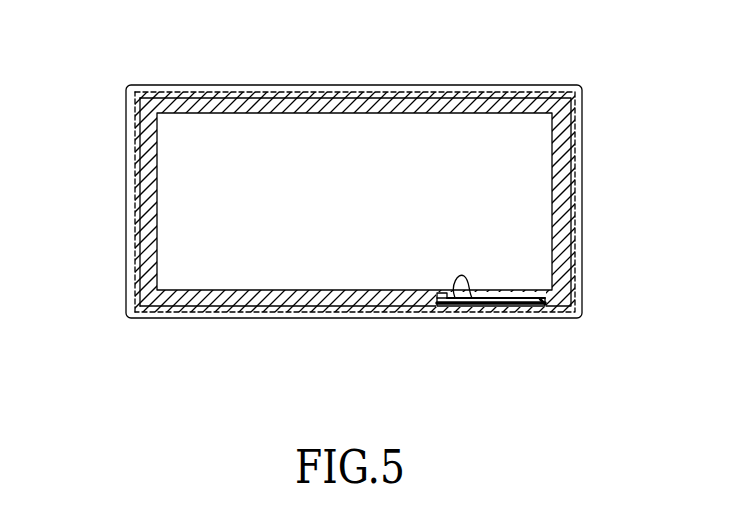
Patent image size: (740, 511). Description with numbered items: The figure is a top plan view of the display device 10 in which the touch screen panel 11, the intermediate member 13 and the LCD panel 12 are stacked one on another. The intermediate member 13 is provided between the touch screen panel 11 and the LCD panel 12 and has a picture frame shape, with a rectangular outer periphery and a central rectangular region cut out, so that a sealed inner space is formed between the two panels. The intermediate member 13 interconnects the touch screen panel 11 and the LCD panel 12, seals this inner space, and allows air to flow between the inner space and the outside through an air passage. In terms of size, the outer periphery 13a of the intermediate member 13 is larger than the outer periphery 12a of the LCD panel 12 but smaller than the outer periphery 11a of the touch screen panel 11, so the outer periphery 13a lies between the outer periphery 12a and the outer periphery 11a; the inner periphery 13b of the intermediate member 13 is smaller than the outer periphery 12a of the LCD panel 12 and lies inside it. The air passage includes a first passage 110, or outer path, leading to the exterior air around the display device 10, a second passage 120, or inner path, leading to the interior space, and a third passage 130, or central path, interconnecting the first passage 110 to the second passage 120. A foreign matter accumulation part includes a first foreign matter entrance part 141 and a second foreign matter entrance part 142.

The display device 10 is at (548, 58).
The touch screen panel 11 is at (580, 180).
The outer periphery of the touch screen panel 11a is at (582, 148).
The LCD panel 12 is at (538, 242).
The outer periphery of the LCD panel 12a is at (571, 272).
The intermediate member 13 is at (147, 177).
The outer periphery of the intermediate member 13a is at (136, 250).
The inner periphery of the intermediate member 13b is at (152, 224).
The first passage 110 is at (503, 307).
The second passage 120 is at (447, 300).
The third passage 130 is at (477, 304).
The first foreign matter entrance part 141 is at (544, 305).
The second foreign matter entrance part 142 is at (430, 298).